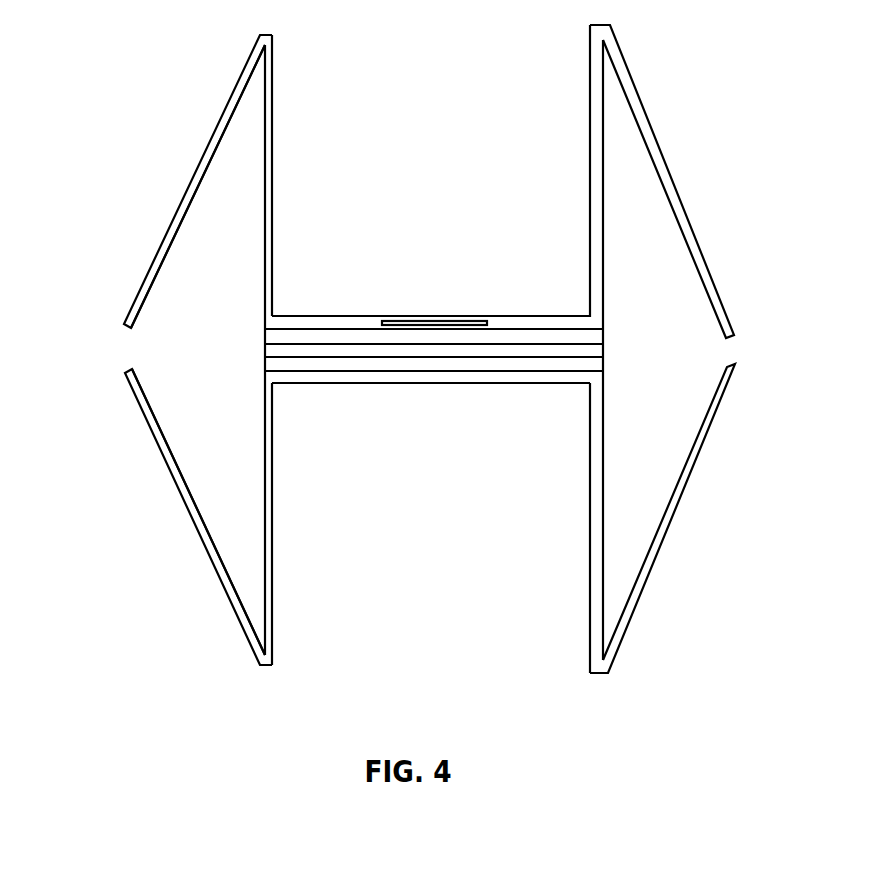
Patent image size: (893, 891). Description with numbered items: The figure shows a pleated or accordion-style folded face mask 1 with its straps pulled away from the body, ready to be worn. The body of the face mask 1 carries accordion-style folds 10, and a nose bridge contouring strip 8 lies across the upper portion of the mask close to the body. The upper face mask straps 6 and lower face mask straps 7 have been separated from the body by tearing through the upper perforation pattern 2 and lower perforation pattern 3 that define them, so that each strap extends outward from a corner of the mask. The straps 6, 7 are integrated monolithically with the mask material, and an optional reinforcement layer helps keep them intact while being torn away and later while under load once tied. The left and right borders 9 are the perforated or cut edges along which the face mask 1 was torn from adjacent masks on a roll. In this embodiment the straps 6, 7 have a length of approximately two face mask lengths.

The face mask 1 is at (290, 352).
The upper perforation pattern 2 is at (186, 193).
The lower perforation pattern 3 is at (143, 413).
The upper face mask strap 6 is at (166, 250).
The lower face mask strap 7 is at (175, 477).
The nose bridge contouring strip 8 is at (432, 319).
The left and right borders 9 is at (264, 368).
The accordion-style folds 10 is at (381, 345).